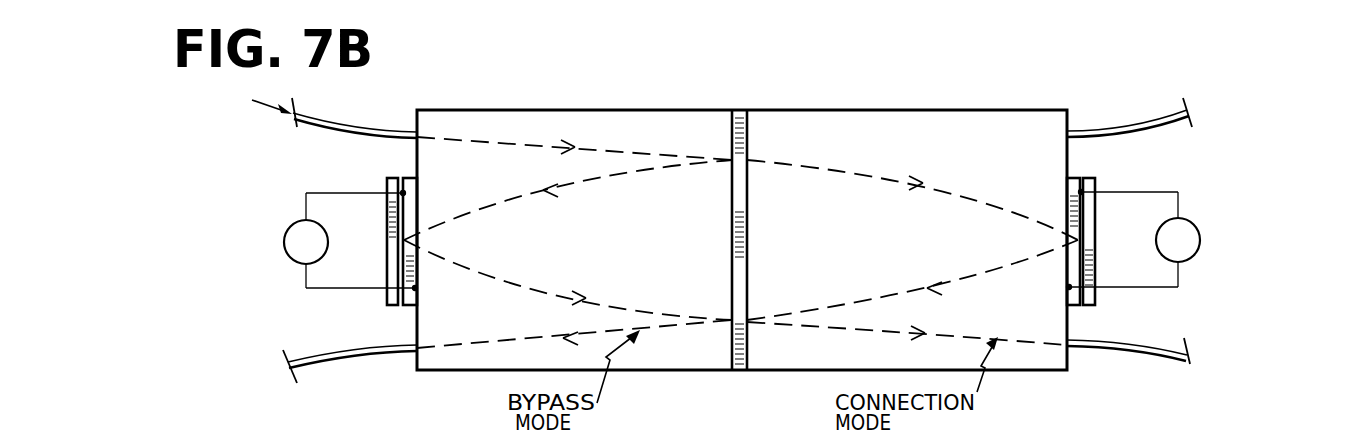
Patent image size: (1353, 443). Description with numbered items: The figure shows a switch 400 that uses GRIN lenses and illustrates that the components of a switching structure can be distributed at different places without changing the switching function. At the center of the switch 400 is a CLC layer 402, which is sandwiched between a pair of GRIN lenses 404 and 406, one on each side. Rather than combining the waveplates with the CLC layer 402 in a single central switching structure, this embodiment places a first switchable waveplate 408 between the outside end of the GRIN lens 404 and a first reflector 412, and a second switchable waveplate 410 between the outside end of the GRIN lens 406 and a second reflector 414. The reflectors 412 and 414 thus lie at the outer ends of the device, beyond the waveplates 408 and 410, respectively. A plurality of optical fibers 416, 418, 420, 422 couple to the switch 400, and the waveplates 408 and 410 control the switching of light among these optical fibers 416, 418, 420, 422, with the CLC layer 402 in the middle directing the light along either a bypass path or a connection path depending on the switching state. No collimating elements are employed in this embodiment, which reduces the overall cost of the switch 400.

The switch 400 is at (1022, 67).
The CLC layer 402 is at (739, 110).
The GRIN lens 404 is at (473, 127).
The GRIN lens 406 is at (930, 127).
The first switchable waveplate 408 is at (410, 306).
The second switchable waveplate 410 is at (1072, 306).
The first reflector 412 is at (392, 178).
The second reflector 414 is at (1100, 176).
The optical fiber 416 is at (324, 120).
The optical fiber 418 is at (1107, 135).
The optical fiber 420 is at (373, 357).
The optical fiber 422 is at (1153, 352).